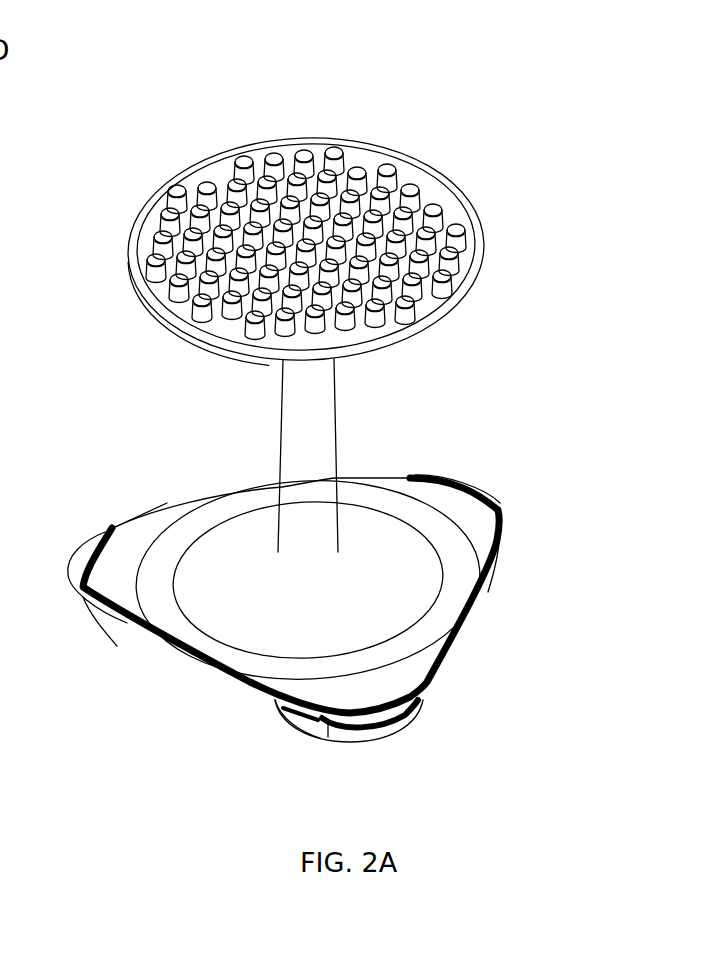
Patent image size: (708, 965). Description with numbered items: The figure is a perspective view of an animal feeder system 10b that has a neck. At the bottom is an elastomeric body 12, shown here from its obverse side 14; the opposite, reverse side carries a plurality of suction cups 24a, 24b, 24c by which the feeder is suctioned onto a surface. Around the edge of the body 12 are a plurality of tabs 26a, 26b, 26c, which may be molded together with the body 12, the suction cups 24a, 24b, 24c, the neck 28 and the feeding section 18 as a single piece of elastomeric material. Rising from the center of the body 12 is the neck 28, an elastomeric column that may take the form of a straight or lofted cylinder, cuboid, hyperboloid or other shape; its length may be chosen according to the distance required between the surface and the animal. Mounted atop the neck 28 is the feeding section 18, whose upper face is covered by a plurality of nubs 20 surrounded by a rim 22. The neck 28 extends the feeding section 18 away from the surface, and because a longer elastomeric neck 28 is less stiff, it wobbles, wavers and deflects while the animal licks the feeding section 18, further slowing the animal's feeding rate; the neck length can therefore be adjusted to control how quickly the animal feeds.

The animal feeder system 10b is at (464, 86).
The elastomeric body 12 is at (208, 682).
The obverse side 14 is at (450, 607).
The feeding section 18 is at (122, 263).
The nubs 20 is at (336, 156).
The rim 22 is at (192, 331).
The suction cup 24a is at (497, 553).
The suction cup 24b is at (114, 625).
The suction cup 24c is at (303, 730).
The tab 26a is at (497, 512).
The tab 26b is at (78, 548).
The tab 26c is at (415, 703).
The neck 28 is at (347, 430).